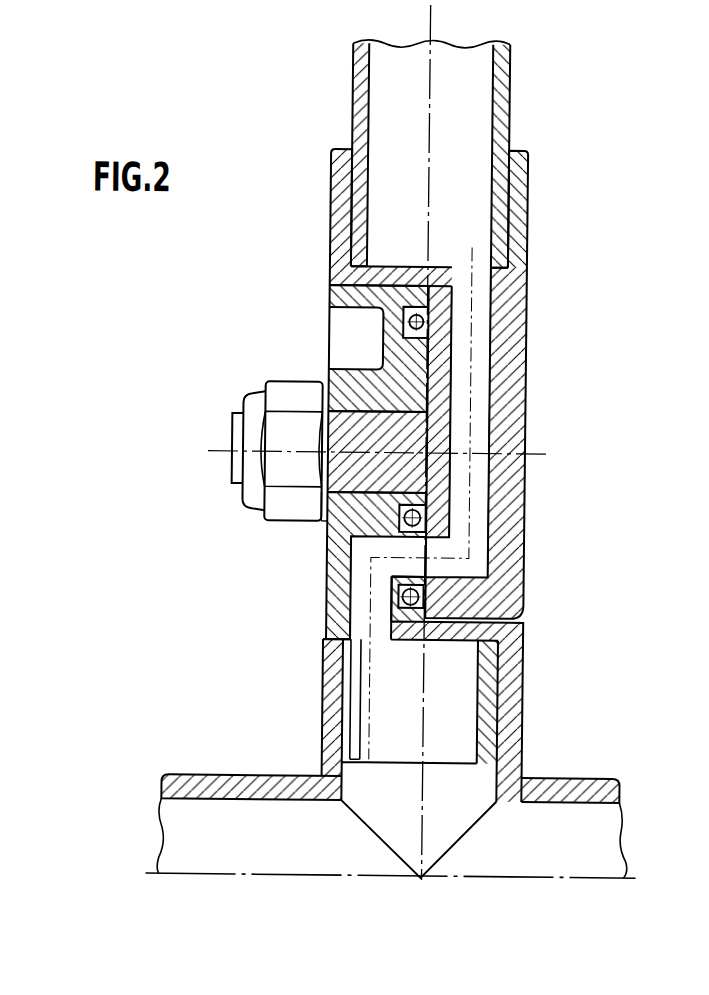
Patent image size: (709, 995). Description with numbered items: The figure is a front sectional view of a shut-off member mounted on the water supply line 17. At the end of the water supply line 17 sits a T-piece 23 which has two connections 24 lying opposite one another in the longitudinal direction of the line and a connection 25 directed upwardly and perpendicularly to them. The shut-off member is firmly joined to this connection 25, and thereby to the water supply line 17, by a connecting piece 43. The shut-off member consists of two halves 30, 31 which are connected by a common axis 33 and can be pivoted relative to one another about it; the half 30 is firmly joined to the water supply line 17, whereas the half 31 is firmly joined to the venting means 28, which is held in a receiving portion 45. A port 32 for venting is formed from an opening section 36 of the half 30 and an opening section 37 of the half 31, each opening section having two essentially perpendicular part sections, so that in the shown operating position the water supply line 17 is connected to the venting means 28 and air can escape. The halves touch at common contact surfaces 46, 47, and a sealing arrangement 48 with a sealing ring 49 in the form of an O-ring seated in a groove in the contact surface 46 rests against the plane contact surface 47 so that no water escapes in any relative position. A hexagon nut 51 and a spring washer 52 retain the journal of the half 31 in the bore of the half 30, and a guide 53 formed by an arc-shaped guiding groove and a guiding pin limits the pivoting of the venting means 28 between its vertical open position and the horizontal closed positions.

The venting means 28 is at (502, 102).
The receiving portion 45 is at (338, 157).
The half 30 is at (392, 338).
The half 31 is at (508, 288).
The guide 53 is at (427, 317).
The hexagon nut 51 is at (278, 393).
The port 32 is at (477, 413).
The opening section 37 is at (482, 480).
The axis 33 is at (232, 455).
The sealing arrangement 48 is at (425, 511).
The sealing ring 49 is at (427, 610).
The contact surface 46 is at (455, 606).
The contact surface 47 is at (455, 606).
The spring washer 52 is at (330, 522).
The opening section 36 is at (352, 618).
The connecting piece 43 is at (490, 680).
The connection 25 is at (510, 723).
The connection 24 is at (585, 785).
The water supply line 17 is at (185, 820).
The T-piece 23 is at (190, 848).